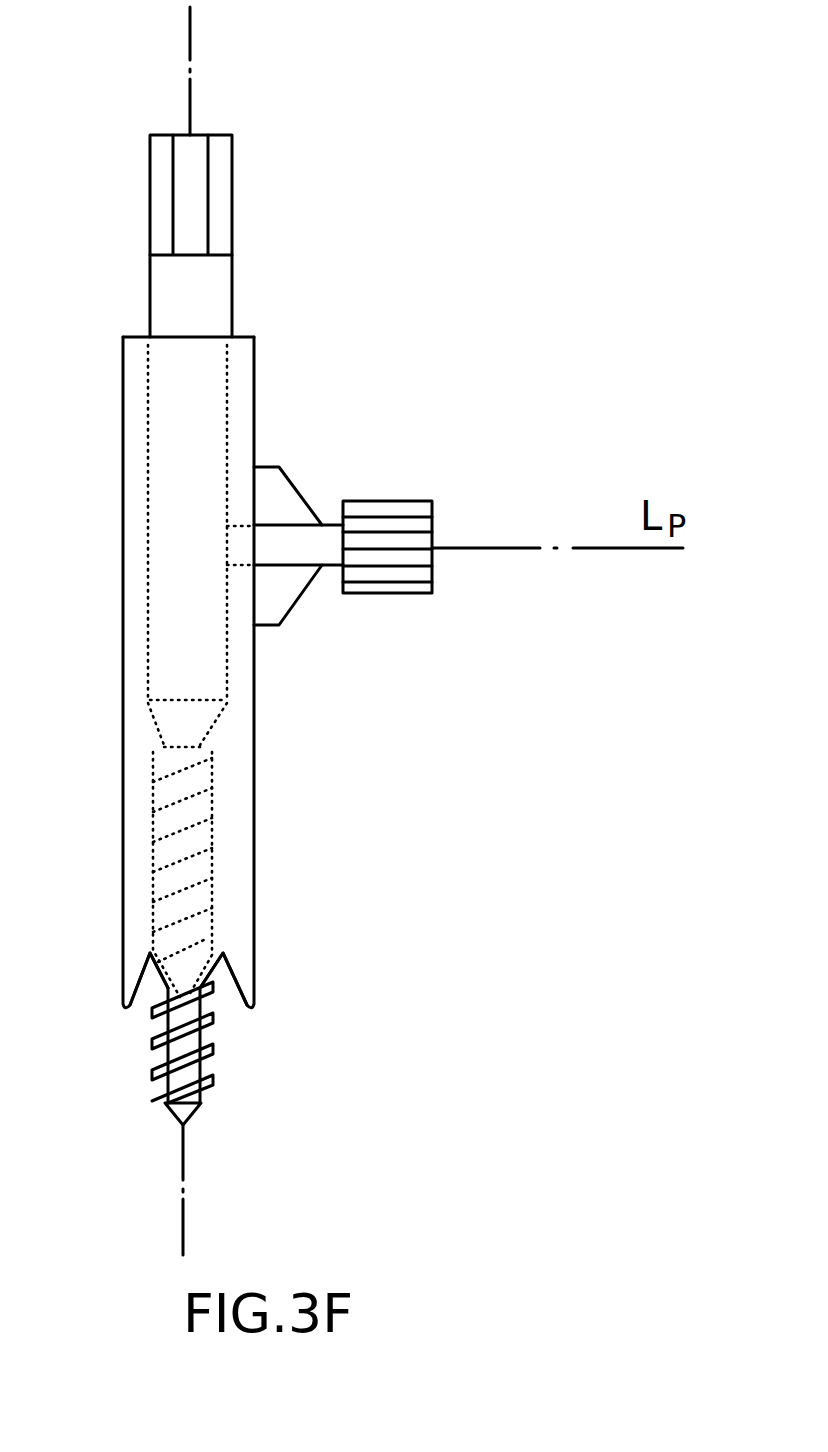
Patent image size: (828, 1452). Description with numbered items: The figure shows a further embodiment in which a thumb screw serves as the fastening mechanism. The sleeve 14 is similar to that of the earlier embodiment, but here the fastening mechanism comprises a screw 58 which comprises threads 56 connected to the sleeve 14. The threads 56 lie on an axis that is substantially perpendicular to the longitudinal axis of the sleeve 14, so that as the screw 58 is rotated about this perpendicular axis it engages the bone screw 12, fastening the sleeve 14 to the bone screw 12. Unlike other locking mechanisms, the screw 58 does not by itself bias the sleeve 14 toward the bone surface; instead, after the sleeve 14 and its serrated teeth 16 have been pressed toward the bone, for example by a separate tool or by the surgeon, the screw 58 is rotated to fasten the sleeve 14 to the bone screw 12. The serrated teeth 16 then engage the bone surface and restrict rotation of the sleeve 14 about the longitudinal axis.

The bone screw 12 is at (207, 1113).
The sleeve 14 is at (258, 804).
The serrated teeth 16 is at (231, 1006).
The threads 56 is at (313, 496).
The screw 58 is at (438, 527).